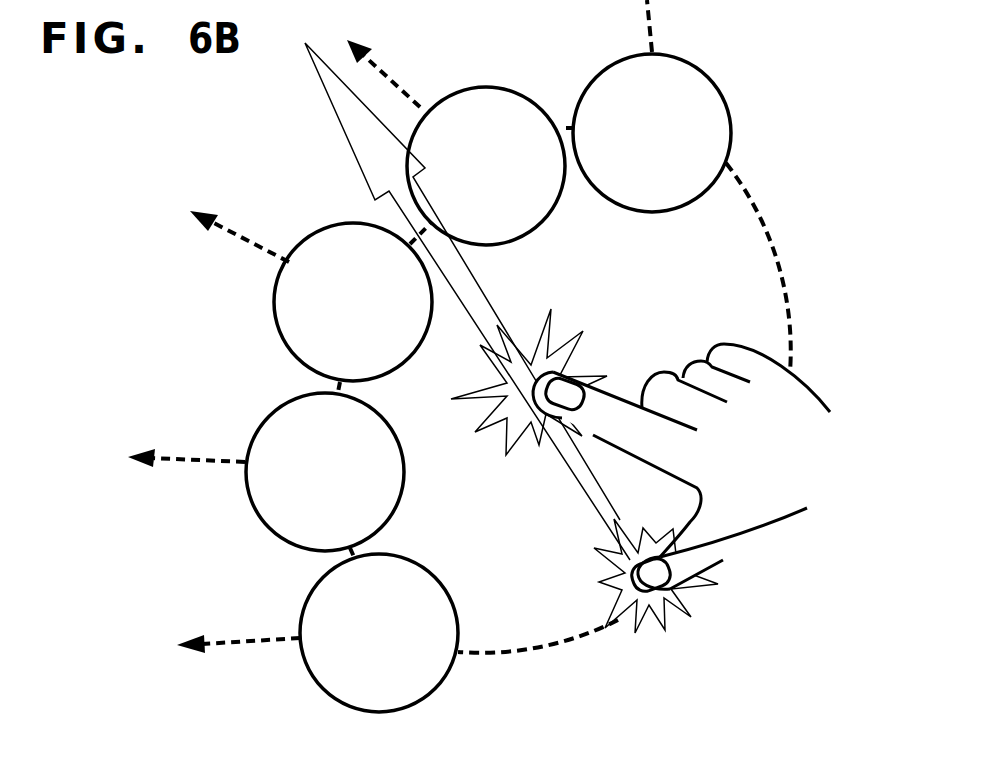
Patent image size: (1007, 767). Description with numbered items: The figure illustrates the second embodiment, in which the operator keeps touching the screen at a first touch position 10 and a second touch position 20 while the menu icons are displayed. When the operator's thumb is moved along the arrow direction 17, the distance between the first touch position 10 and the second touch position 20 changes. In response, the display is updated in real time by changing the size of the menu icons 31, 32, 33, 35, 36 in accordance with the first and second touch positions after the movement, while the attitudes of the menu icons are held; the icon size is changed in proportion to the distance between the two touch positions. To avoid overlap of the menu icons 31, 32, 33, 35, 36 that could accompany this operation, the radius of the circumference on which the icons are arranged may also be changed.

The first touch position 10 is at (582, 345).
The second touch position 20 is at (610, 590).
The arrow direction 17 is at (340, 133).
The menu icon 31 is at (312, 230).
The menu icon 32 is at (528, 96).
The menu icon 33 is at (733, 134).
The menu icon 35 is at (305, 610).
The menu icon 36 is at (262, 418).